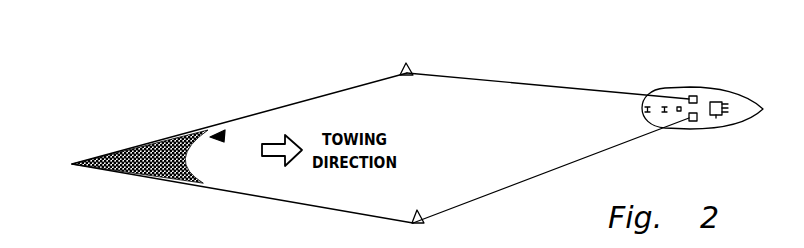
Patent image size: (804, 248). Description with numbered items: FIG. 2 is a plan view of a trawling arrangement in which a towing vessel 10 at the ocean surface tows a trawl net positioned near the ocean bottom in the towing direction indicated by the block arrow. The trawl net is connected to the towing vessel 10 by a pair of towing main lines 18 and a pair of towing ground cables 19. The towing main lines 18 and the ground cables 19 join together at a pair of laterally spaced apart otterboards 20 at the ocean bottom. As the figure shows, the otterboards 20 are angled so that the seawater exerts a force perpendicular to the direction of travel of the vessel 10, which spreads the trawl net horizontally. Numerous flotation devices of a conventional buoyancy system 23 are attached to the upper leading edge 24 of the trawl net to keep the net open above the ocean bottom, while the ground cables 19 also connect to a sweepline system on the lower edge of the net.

The towing vessel 10 is at (707, 130).
The towing main lines 18 is at (577, 87).
The towing ground cables 19 is at (355, 85).
The otterboards 20 is at (410, 65).
The buoyancy system 23 is at (223, 136).
The upper leading edge 24 is at (186, 168).